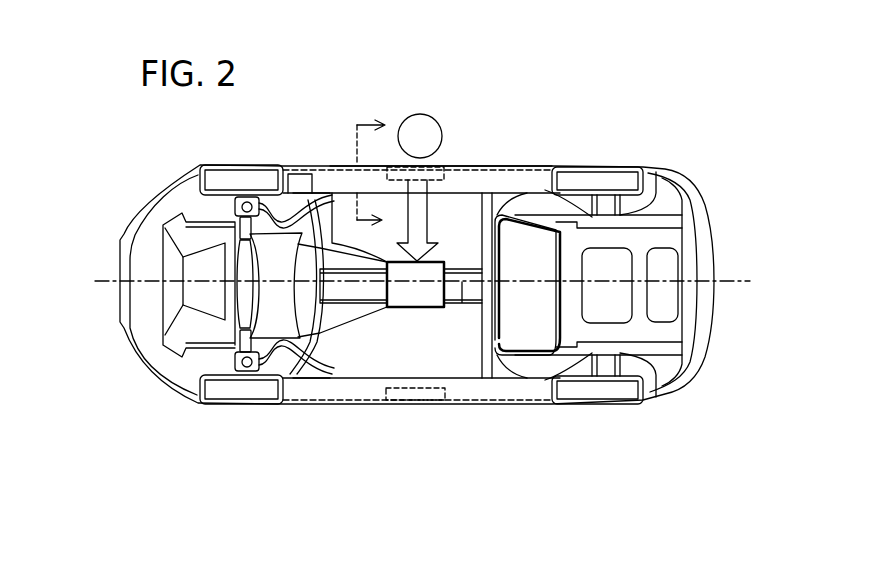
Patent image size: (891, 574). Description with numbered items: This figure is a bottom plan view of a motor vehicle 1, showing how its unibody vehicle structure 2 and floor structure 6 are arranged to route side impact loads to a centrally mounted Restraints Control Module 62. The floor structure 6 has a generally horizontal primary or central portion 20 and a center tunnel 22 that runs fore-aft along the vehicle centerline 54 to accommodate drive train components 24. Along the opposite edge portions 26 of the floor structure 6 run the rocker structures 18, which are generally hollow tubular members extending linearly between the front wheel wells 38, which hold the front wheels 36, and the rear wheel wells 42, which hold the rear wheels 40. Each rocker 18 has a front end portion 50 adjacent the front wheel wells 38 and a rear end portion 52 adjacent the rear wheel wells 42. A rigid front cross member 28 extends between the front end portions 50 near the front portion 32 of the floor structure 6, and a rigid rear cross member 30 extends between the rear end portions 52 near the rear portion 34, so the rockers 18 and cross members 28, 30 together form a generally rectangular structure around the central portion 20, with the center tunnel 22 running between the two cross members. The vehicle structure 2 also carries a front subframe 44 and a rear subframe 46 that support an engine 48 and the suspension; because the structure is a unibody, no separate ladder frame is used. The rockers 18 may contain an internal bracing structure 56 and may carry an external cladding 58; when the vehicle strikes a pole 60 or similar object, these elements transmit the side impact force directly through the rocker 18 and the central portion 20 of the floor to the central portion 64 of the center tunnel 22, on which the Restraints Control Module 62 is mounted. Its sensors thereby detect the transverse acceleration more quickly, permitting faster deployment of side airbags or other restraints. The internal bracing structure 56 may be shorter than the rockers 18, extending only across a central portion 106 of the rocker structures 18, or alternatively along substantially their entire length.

The motor vehicle 1 is at (728, 168).
The vehicle structure 2 is at (713, 314).
The floor structure 6 is at (455, 203).
The rocker structures 18 is at (537, 165).
The primary or central portion 20 is at (437, 212).
The center tunnel 22 is at (370, 308).
The drive train components 24 is at (455, 305).
The opposite edge portions 26 is at (347, 167).
The front cross member 28 is at (300, 345).
The rear cross member 30 is at (563, 165).
The front portion 32 is at (310, 350).
The rear portion 34 is at (478, 380).
The front wheels 36 is at (223, 165).
The front wheel wells 38 is at (198, 165).
The rear wheels 40 is at (632, 173).
The rear wheel wells 42 is at (648, 170).
The front subframe 44 is at (262, 390).
The rear subframe 46 is at (615, 342).
The engine 48 is at (188, 316).
The front end portions 50 is at (300, 166).
The rear end portions 52 is at (590, 165).
The vehicle centerline 54 is at (750, 279).
The internal bracing structure 56 is at (385, 165).
The external cladding 58 is at (490, 195).
The pole 60 is at (420, 113).
The Restraints Control Module 62 is at (438, 308).
The central portion of center tunnel 64 is at (362, 312).
The central portion of rocker structures 106 is at (445, 167).